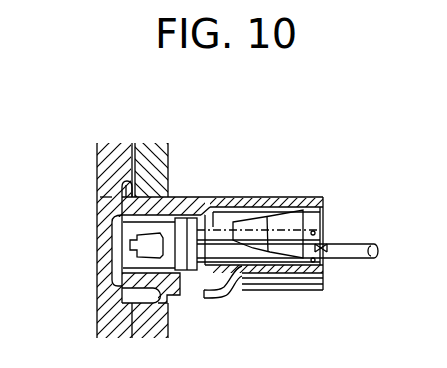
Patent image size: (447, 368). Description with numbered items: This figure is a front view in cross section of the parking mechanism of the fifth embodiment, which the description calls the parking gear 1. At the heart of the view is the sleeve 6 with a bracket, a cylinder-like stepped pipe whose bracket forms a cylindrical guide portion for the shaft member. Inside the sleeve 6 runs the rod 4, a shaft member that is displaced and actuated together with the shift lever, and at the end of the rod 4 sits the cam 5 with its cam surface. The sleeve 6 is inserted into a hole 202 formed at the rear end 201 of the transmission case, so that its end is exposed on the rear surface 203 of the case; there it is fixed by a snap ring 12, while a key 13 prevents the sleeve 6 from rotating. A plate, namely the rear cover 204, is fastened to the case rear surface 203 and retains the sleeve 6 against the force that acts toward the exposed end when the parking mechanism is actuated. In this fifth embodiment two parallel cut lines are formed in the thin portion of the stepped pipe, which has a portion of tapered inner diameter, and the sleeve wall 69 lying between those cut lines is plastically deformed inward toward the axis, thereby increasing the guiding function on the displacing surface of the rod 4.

The parking gear 1 is at (97, 192).
The snap ring 12 is at (122, 177).
The key 13 is at (121, 295).
The rear end 201 is at (152, 162).
The hole 202 is at (181, 200).
The rear surface 203 is at (126, 182).
The rear cover 204 is at (104, 197).
The rod 4 is at (357, 245).
The cam 5 is at (187, 272).
The sleeve with a bracket 6 is at (245, 197).
The sleeve wall 69 is at (300, 273).